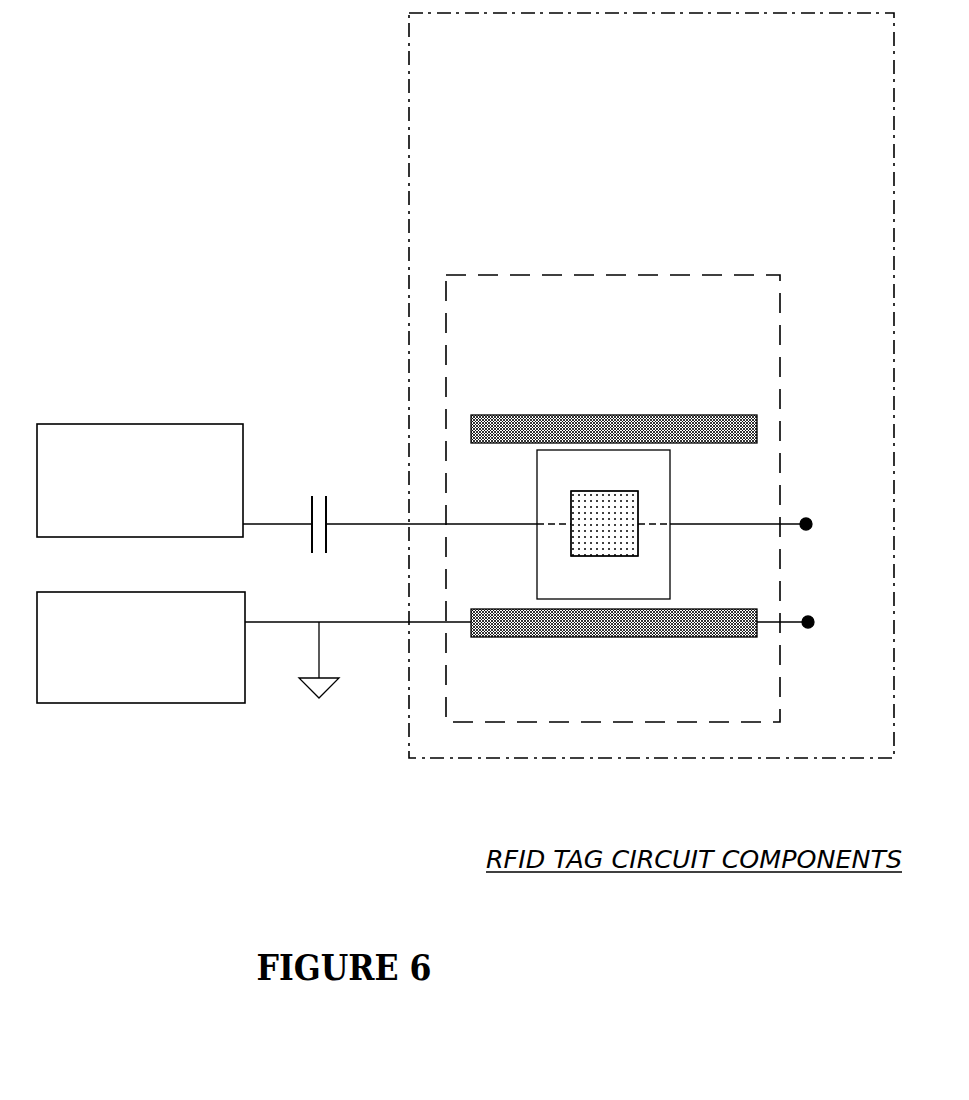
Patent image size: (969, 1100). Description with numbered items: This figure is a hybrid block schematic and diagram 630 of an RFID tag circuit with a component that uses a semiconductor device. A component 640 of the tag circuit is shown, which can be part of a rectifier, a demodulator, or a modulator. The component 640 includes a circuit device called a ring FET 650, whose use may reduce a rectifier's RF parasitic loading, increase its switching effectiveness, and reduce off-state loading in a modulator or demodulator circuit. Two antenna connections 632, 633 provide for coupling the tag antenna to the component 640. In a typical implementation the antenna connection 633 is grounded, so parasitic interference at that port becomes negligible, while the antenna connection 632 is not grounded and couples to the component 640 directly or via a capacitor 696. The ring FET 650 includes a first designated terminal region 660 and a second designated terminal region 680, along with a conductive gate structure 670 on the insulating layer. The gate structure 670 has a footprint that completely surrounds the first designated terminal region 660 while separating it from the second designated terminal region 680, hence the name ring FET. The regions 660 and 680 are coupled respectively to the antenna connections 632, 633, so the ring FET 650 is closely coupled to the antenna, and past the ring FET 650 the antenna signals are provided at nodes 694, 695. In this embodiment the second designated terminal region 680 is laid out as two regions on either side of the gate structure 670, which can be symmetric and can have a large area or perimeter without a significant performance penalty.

The hybrid block schematic and diagram 630 is at (178, 42).
The antenna connection 632 is at (121, 464).
The antenna connection 633 is at (121, 632).
The component 640 is at (630, 86).
The ring FET 650 is at (522, 316).
The first designated terminal region 660 is at (571, 500).
The conductive gate structure 670 is at (537, 538).
The second designated terminal region 680 is at (624, 414).
The node 694 is at (806, 518).
The node 695 is at (808, 616).
The capacitor 696 is at (325, 497).